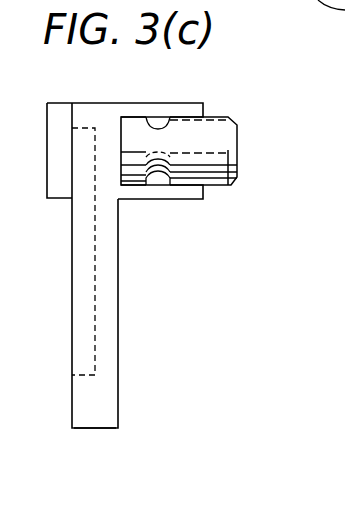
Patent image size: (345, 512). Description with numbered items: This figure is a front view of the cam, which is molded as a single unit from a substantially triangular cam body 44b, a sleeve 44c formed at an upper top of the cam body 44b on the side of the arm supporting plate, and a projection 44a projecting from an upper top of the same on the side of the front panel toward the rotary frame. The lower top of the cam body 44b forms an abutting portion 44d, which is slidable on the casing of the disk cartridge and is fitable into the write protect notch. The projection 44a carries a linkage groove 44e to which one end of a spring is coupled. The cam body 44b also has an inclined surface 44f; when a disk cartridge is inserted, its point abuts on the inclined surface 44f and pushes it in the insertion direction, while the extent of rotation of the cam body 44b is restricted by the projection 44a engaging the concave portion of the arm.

The projection 44a is at (220, 187).
The cam body 44b is at (118, 294).
The sleeve 44c is at (159, 104).
The abutting portion 44d is at (103, 430).
The linkage groove 44e is at (160, 182).
The inclined surface 44f is at (118, 364).